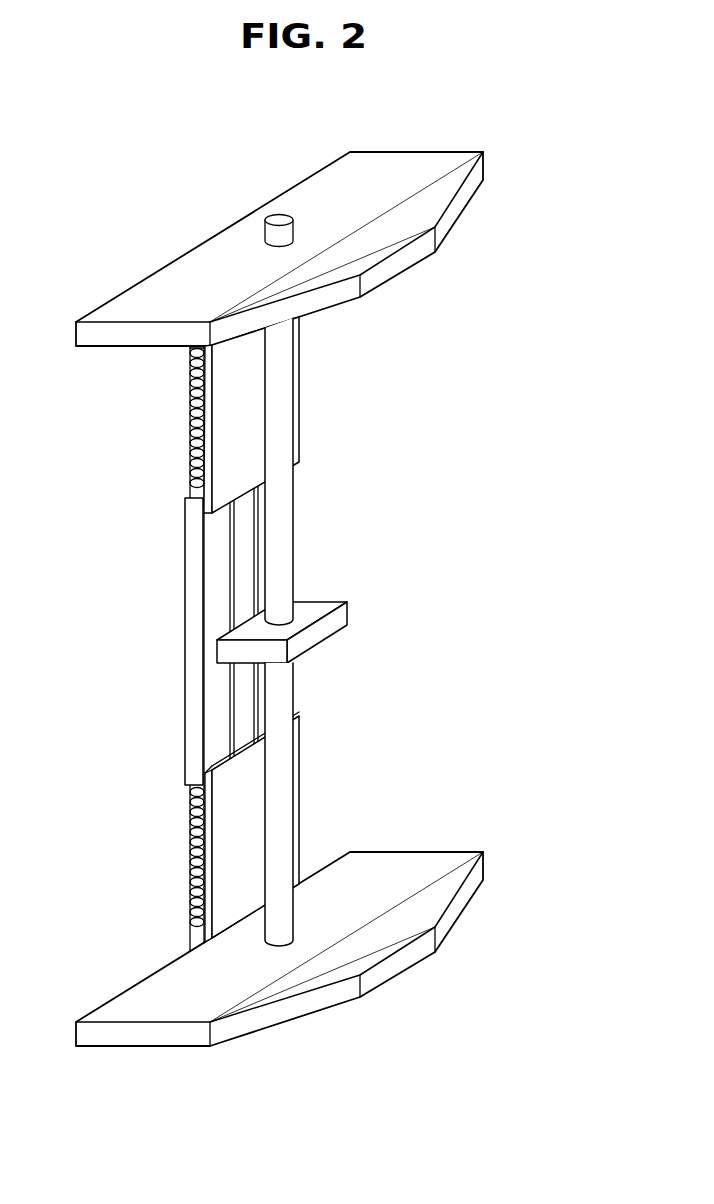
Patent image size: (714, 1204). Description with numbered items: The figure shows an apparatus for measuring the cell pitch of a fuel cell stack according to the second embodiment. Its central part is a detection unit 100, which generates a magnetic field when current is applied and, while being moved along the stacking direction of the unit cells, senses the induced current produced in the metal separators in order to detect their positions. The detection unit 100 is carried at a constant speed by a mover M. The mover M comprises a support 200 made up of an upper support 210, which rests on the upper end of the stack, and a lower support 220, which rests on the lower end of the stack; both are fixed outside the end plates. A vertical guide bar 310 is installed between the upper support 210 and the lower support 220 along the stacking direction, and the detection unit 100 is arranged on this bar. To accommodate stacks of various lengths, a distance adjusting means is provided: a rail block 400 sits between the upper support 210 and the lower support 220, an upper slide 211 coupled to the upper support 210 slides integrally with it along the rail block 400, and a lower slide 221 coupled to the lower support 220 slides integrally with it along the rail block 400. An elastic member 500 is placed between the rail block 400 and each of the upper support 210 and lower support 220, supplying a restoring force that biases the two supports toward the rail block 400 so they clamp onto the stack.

The detection unit 100 is at (338, 616).
The support 200 is at (338, 599).
The upper support 210 is at (452, 212).
The lower support 220 is at (473, 883).
The upper slide 211 is at (227, 415).
The lower slide 221 is at (225, 887).
The vertical guide bar 310 is at (285, 486).
The rail block 400 is at (192, 590).
The elastic member 500 is at (190, 462).
The mover M is at (338, 599).